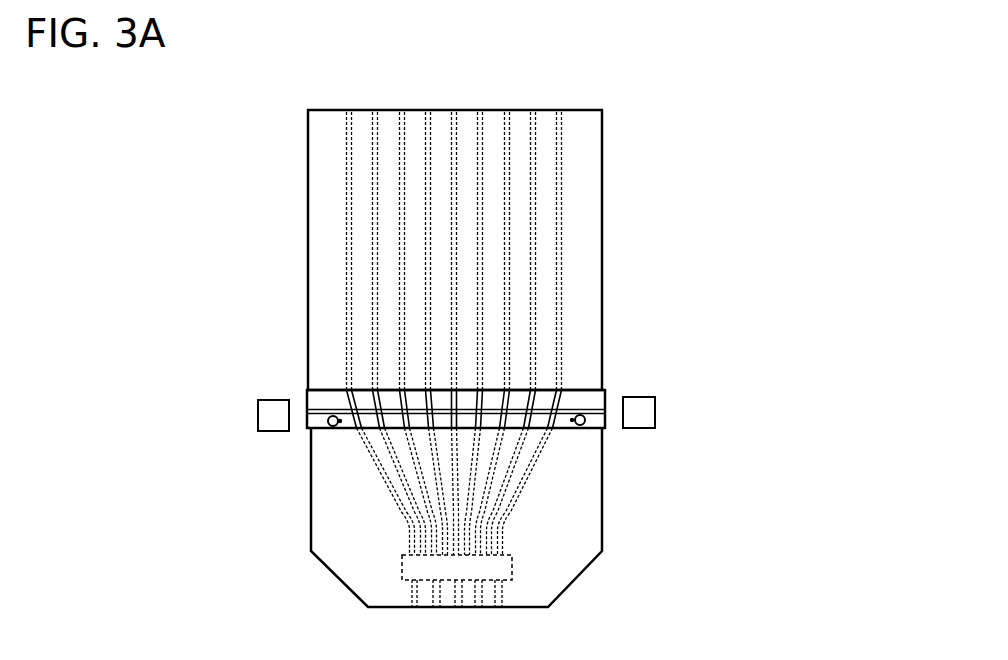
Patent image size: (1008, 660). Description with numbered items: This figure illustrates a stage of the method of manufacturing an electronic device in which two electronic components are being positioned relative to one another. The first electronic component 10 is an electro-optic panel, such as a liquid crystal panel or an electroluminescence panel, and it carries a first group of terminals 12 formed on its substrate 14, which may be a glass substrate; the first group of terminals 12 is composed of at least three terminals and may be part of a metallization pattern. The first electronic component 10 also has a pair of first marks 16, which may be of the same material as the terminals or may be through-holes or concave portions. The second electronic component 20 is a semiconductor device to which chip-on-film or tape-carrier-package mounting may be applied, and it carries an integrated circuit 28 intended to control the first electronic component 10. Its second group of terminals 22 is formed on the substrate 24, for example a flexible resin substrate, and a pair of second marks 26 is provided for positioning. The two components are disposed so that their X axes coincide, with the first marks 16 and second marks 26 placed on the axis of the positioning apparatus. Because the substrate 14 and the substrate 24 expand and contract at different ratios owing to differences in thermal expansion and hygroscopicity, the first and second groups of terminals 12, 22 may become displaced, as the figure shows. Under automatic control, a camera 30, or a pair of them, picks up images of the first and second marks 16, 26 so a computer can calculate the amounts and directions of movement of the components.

The first electronic component 10 is at (603, 203).
The first group of terminals 12 is at (572, 401).
The substrate 14 is at (312, 401).
The first marks 16 is at (346, 396).
The second electronic component 20 is at (603, 530).
The second group of terminals 22 is at (570, 436).
The substrate 24 is at (355, 534).
The second marks 26 is at (335, 430).
The integrated circuit 28 is at (512, 565).
The camera 30 is at (273, 431).